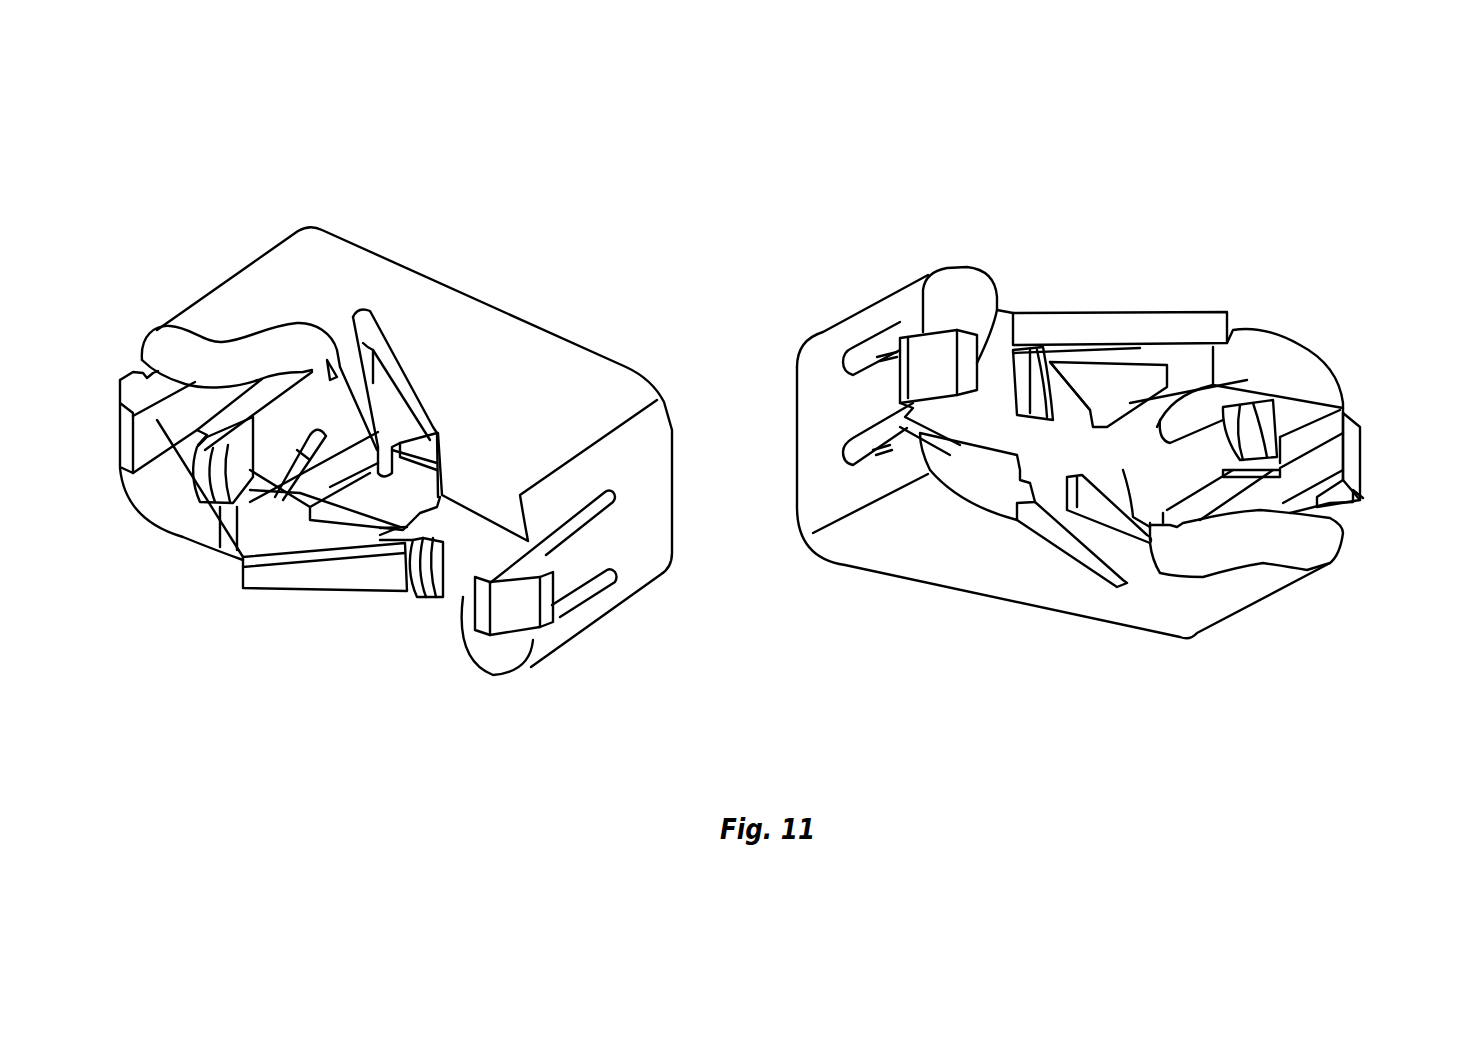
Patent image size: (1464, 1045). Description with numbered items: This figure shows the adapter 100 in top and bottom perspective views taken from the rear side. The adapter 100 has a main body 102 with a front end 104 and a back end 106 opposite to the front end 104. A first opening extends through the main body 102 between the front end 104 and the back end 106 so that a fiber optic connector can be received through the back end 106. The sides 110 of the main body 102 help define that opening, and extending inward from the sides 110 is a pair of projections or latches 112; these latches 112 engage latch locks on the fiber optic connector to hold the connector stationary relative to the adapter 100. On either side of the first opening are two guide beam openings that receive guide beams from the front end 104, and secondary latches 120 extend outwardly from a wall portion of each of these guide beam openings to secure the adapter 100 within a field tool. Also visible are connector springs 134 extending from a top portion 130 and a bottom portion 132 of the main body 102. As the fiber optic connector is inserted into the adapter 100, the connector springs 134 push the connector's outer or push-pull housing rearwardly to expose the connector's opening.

The adapter 100 is at (388, 180).
The main body 102 is at (513, 393).
The front end 104 is at (634, 372).
The back end 106 is at (1326, 355).
The sides 110 is at (1143, 460).
The latches 112 is at (218, 492).
The secondary latches 120 is at (120, 394).
The top portion 130 is at (460, 312).
The bottom portion 132 is at (1003, 578).
The connector springs 134 is at (376, 411).